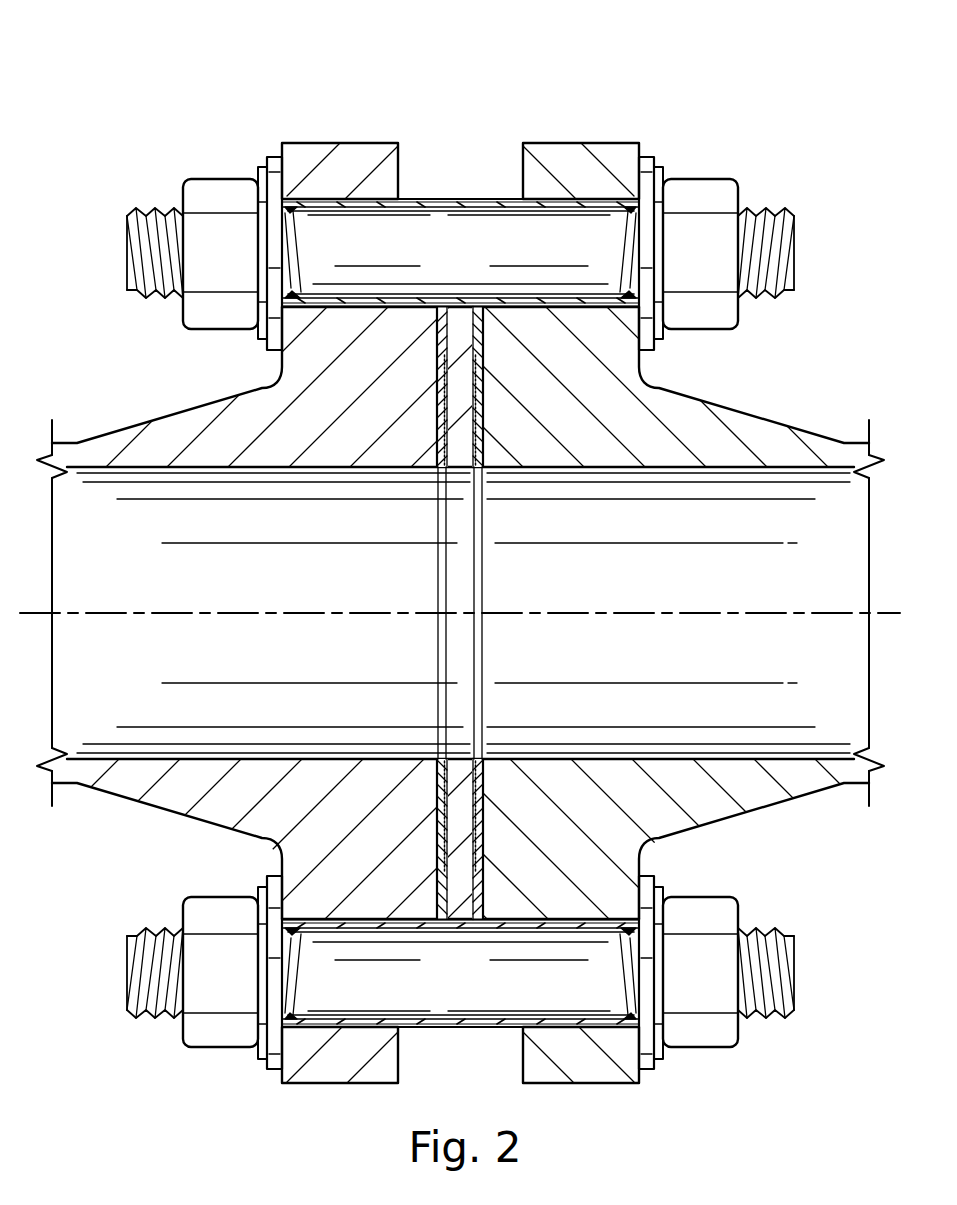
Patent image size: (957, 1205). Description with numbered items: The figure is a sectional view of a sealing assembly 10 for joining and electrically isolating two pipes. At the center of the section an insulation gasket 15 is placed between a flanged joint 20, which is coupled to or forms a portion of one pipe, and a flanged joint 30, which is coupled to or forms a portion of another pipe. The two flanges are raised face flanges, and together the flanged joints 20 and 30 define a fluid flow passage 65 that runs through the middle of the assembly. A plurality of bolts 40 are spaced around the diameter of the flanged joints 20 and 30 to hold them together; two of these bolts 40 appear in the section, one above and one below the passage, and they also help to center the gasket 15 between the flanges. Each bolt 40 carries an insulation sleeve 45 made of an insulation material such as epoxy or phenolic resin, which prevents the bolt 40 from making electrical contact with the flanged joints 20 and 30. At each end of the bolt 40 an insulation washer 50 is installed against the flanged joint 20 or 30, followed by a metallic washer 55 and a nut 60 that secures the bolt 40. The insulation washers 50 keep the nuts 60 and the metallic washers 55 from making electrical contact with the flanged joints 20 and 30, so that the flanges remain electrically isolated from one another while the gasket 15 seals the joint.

The sealing assembly 10 is at (368, 73).
The insulation gasket 15 is at (457, 320).
The flanged joint 20 is at (427, 335).
The flanged joint 30 is at (497, 337).
The bolts 40 is at (444, 218).
The insulation sleeves 45 is at (480, 200).
The insulation washers 50 is at (275, 157).
The metallic washers 55 is at (256, 316).
The nuts 60 is at (230, 178).
The fluid flow passage 65 is at (548, 690).